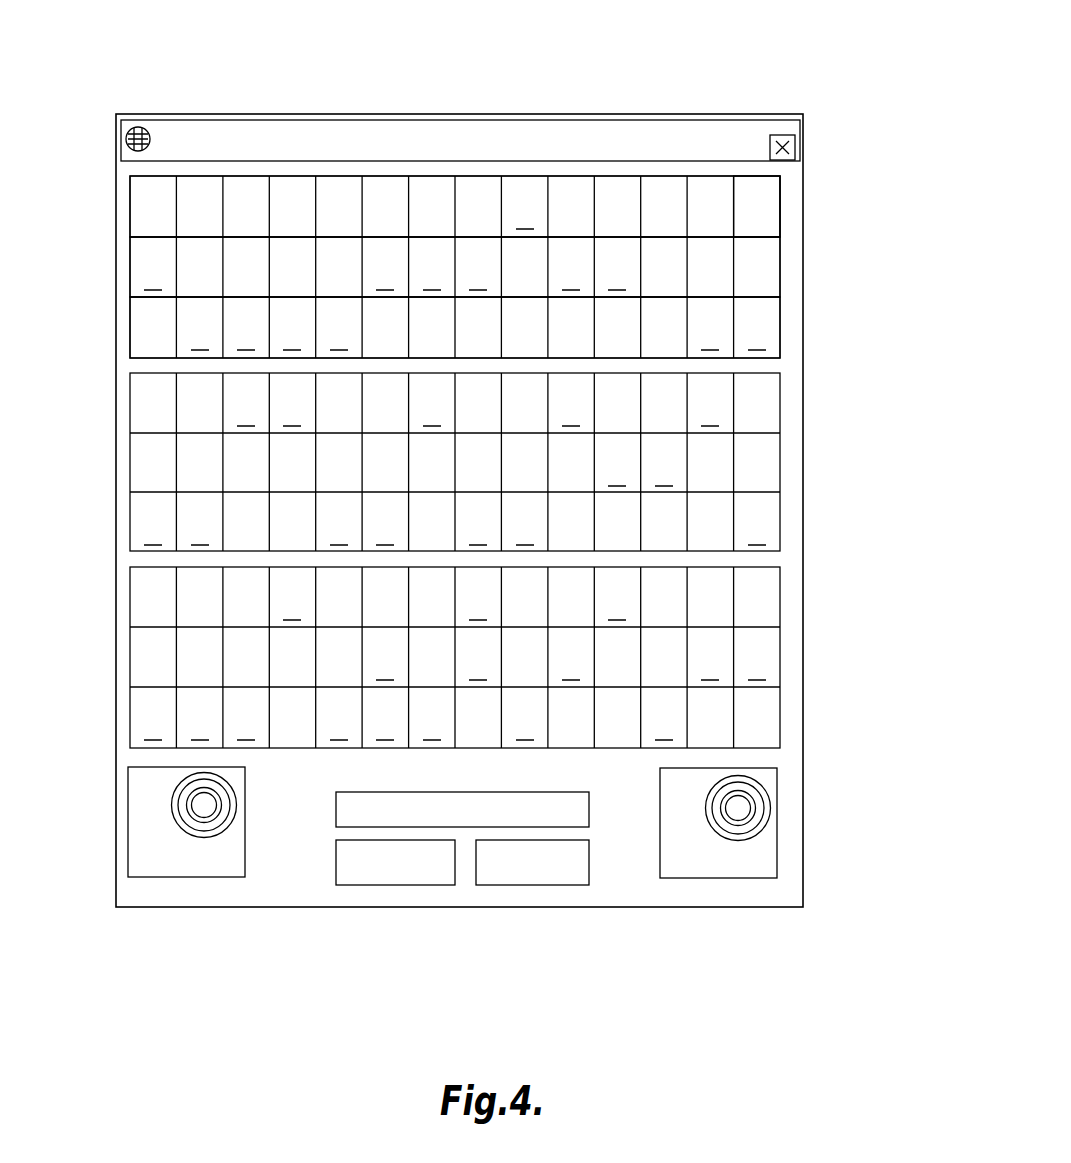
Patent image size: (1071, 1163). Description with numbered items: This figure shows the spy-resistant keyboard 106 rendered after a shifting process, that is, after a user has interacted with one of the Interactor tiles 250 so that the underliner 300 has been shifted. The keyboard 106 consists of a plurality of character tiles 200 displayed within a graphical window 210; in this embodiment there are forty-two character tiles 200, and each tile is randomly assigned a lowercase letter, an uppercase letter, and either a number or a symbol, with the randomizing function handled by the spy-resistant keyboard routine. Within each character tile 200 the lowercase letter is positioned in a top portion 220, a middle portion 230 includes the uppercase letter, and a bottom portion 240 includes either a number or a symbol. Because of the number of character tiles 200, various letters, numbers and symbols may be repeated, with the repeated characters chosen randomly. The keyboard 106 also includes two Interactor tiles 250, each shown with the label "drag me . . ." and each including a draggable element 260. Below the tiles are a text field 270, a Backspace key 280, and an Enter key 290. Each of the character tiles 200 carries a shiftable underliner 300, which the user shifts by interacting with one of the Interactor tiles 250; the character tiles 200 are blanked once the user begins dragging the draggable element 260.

The spy-resistant keyboard 106 is at (646, 76).
The character tiles 200 is at (777, 211).
The graphical window 210 is at (472, 440).
The top portion 220 is at (505, 201).
The middle portion 230 is at (772, 282).
The bottom portion 240 is at (767, 350).
The Interactor tiles 250 is at (143, 870).
The draggable element 260 is at (177, 813).
The text field 270 is at (575, 817).
The Backspace key 280 is at (392, 887).
The Enter key 290 is at (528, 887).
The shiftable underliner 300 is at (145, 548).